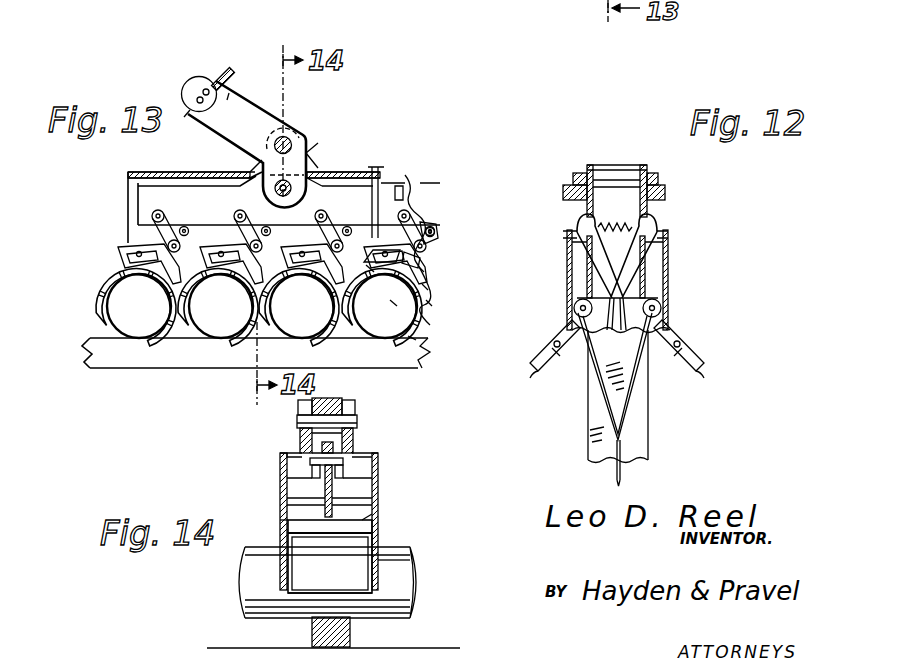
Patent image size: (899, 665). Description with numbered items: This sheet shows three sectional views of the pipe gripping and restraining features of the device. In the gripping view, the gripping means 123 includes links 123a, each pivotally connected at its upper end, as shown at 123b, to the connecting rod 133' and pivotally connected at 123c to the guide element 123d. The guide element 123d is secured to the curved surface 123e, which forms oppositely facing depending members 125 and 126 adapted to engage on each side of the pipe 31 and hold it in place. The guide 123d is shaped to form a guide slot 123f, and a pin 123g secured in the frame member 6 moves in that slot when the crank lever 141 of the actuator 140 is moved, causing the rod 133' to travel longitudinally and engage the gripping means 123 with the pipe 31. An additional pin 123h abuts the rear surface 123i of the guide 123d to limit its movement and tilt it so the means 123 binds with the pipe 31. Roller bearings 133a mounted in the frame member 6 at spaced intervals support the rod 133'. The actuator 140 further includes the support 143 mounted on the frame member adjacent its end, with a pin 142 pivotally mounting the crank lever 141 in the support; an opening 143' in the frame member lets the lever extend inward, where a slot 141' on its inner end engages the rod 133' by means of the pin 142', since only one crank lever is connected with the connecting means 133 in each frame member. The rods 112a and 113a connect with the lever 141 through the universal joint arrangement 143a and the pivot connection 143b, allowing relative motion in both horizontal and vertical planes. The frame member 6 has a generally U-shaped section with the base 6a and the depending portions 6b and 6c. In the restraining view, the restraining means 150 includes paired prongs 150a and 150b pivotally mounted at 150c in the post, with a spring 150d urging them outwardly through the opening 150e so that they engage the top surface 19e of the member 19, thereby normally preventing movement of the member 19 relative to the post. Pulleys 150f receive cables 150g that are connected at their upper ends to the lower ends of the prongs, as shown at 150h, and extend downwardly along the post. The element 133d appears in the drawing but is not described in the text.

In FIG. 14, the frame member 6 is at (360, 453).
In FIG. 14, the base of the U 6a is at (288, 452).
In FIG. 14, the depending portion 6b is at (280, 588).
In FIG. 14, the depending portion 6c is at (380, 570).
In FIG. 12, the member 19 is at (669, 246).
In FIG. 12, the top surface of the member 19e is at (598, 257).
In FIG. 13, the pipe 31 is at (428, 330).
In FIG. 12, the rod 112a is at (705, 373).
In FIG. 12, the rod 113a is at (528, 378).
In FIG. 13, the gripping means 123 is at (432, 242).
In FIG. 13, the link 123a is at (452, 210).
In FIG. 14, the link 123a is at (322, 498).
In FIG. 13, the pivotal connection 123b is at (388, 212).
In FIG. 14, the pivotal connection 123b is at (341, 490).
In FIG. 13, the pivotal connection 123c is at (423, 260).
In FIG. 14, the pivotal connection 123c is at (380, 523).
In FIG. 13, the guide element 123d is at (423, 270).
In FIG. 13, the curved surface 123e is at (428, 287).
In FIG. 13, the guide slot 123f is at (412, 338).
In FIG. 13, the pin 123g is at (375, 176).
In FIG. 14, the pin 123g is at (278, 524).
In FIG. 13, the additional pin 123h is at (370, 268).
In FIG. 13, the rear surface of the guide 123i is at (393, 305).
In FIG. 14, the rear surface of the guide 123i is at (323, 531).
In FIG. 13, the depending member 125 is at (255, 353).
In FIG. 14, the depending member 125 is at (364, 593).
In FIG. 13, the depending member 126 is at (432, 303).
In FIG. 13, the connecting means 133 is at (431, 228).
In FIG. 13, the connecting rod 133' is at (301, 203).
In FIG. 14, the connecting rod 133' is at (372, 468).
In FIG. 13, the roller bearing 133a is at (128, 226).
In FIG. 13, the jaw bracket 133d is at (440, 230).
In FIG. 13, the actuator 140 is at (196, 78).
In FIG. 13, the crank lever 141 is at (247, 89).
In FIG. 13, the slot 141' is at (235, 200).
In FIG. 14, the slot 141' is at (292, 462).
In FIG. 13, the pin 142 is at (295, 124).
In FIG. 14, the pin 142 is at (345, 417).
In FIG. 13, the pin 142' is at (257, 157).
In FIG. 14, the pin 142' is at (382, 444).
In FIG. 13, the support 143 is at (269, 144).
In FIG. 13, the opening 143' is at (224, 161).
In FIG. 13, the universal joint arrangement 143a is at (210, 84).
In FIG. 13, the pivot connection 143b is at (190, 114).
In FIG. 12, the restraining means 150 is at (657, 226).
In FIG. 12, the prong 150a is at (651, 229).
In FIG. 12, the prong 150b is at (578, 222).
In FIG. 12, the pivotal mounting 150c is at (632, 255).
In FIG. 12, the spring 150d is at (615, 230).
In FIG. 12, the opening 150e is at (660, 217).
In FIG. 12, the pulley 150f is at (574, 309).
In FIG. 12, the cable 150g is at (647, 377).
In FIG. 12, the cable connection 150h is at (615, 330).